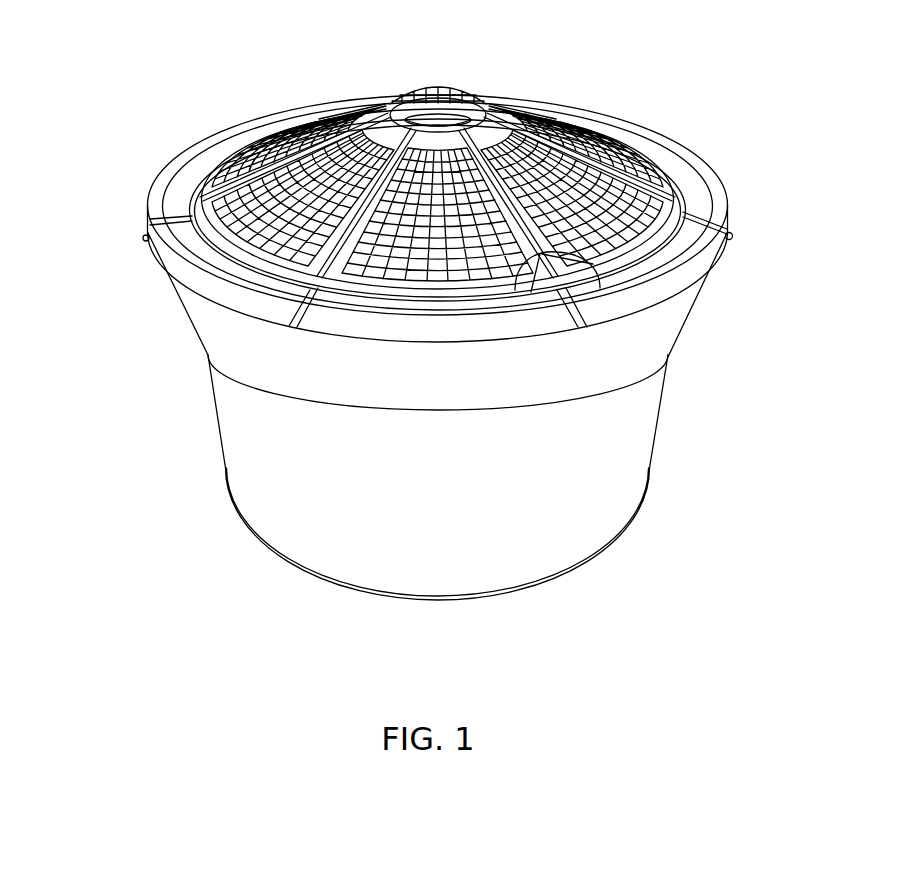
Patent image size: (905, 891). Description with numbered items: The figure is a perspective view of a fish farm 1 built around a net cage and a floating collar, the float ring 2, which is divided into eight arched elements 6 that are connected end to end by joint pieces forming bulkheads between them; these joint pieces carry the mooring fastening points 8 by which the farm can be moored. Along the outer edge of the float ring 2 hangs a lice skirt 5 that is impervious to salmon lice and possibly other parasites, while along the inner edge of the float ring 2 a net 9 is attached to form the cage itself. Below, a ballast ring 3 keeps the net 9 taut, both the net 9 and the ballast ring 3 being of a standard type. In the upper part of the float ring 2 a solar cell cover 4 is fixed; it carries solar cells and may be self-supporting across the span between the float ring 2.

The fish farm 1 is at (163, 195).
The float ring 2 is at (190, 266).
The ballast ring 3 is at (622, 528).
The solar cell cover 4 is at (228, 128).
The lice skirt 5 is at (680, 307).
The arched elements 6 is at (715, 196).
The mooring fastening points 8 is at (727, 245).
The net 9 is at (620, 413).